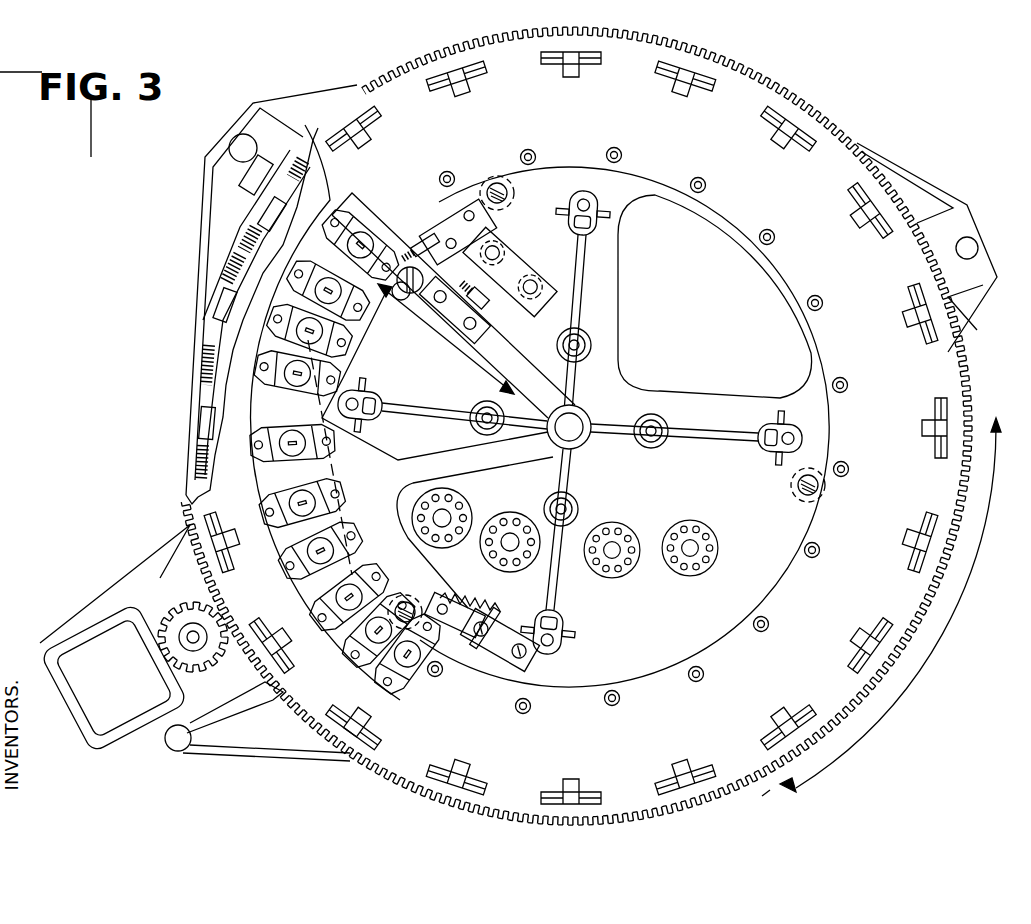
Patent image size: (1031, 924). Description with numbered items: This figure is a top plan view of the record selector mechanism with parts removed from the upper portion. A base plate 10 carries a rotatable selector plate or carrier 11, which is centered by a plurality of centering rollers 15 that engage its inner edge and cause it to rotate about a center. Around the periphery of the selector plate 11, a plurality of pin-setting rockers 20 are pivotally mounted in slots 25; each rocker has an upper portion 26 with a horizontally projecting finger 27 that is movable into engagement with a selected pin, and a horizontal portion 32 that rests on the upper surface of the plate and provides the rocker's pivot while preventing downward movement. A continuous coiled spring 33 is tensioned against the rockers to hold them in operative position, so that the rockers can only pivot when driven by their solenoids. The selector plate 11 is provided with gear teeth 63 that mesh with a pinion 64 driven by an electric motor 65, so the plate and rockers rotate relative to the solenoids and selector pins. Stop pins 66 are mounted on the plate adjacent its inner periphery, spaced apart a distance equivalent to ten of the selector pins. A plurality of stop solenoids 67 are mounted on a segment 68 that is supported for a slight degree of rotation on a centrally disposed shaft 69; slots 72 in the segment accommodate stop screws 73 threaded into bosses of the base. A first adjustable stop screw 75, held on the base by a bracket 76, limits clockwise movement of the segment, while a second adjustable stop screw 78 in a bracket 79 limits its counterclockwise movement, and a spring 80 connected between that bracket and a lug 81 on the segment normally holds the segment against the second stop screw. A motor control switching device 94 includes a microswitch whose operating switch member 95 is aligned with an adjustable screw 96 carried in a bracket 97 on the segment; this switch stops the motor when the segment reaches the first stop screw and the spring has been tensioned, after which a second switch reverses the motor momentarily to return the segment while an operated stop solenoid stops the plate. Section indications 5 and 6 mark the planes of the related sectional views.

The section line 5- 5 is at (881, 605).
The section line 6- 6 is at (442, 339).
The base plate 10 is at (218, 222).
The selector plate 11 is at (190, 500).
The centering rollers 15 is at (515, 192).
The pin-setting rockers 20 is at (580, 785).
The slots 25 is at (358, 746).
The upper portion 26 is at (358, 740).
The finger 27 is at (368, 714).
The horizontal portion 32 is at (370, 735).
The coiled spring 33 is at (205, 375).
The gear teeth 63 is at (185, 548).
The pinion 64 is at (180, 612).
The electric motor 65 is at (105, 678).
The stop pins 66 is at (616, 700).
The stop solenoids 67 is at (312, 480).
The segment 68 is at (368, 500).
The shaft 69 is at (582, 440).
The slots 72 is at (396, 300).
The stop screws 73 is at (408, 300).
The first adjustable stop screw 75 is at (425, 250).
The bracket 76 is at (455, 205).
The second adjustable stop screw 78 is at (460, 650).
The bracket 79 is at (503, 660).
The spring 80 is at (480, 607).
The lug 81 is at (452, 597).
The motor control switching device 94 is at (528, 275).
The operating switch member 95 is at (488, 305).
The adjustable screw 96 is at (428, 254).
The bracket 97 is at (470, 318).